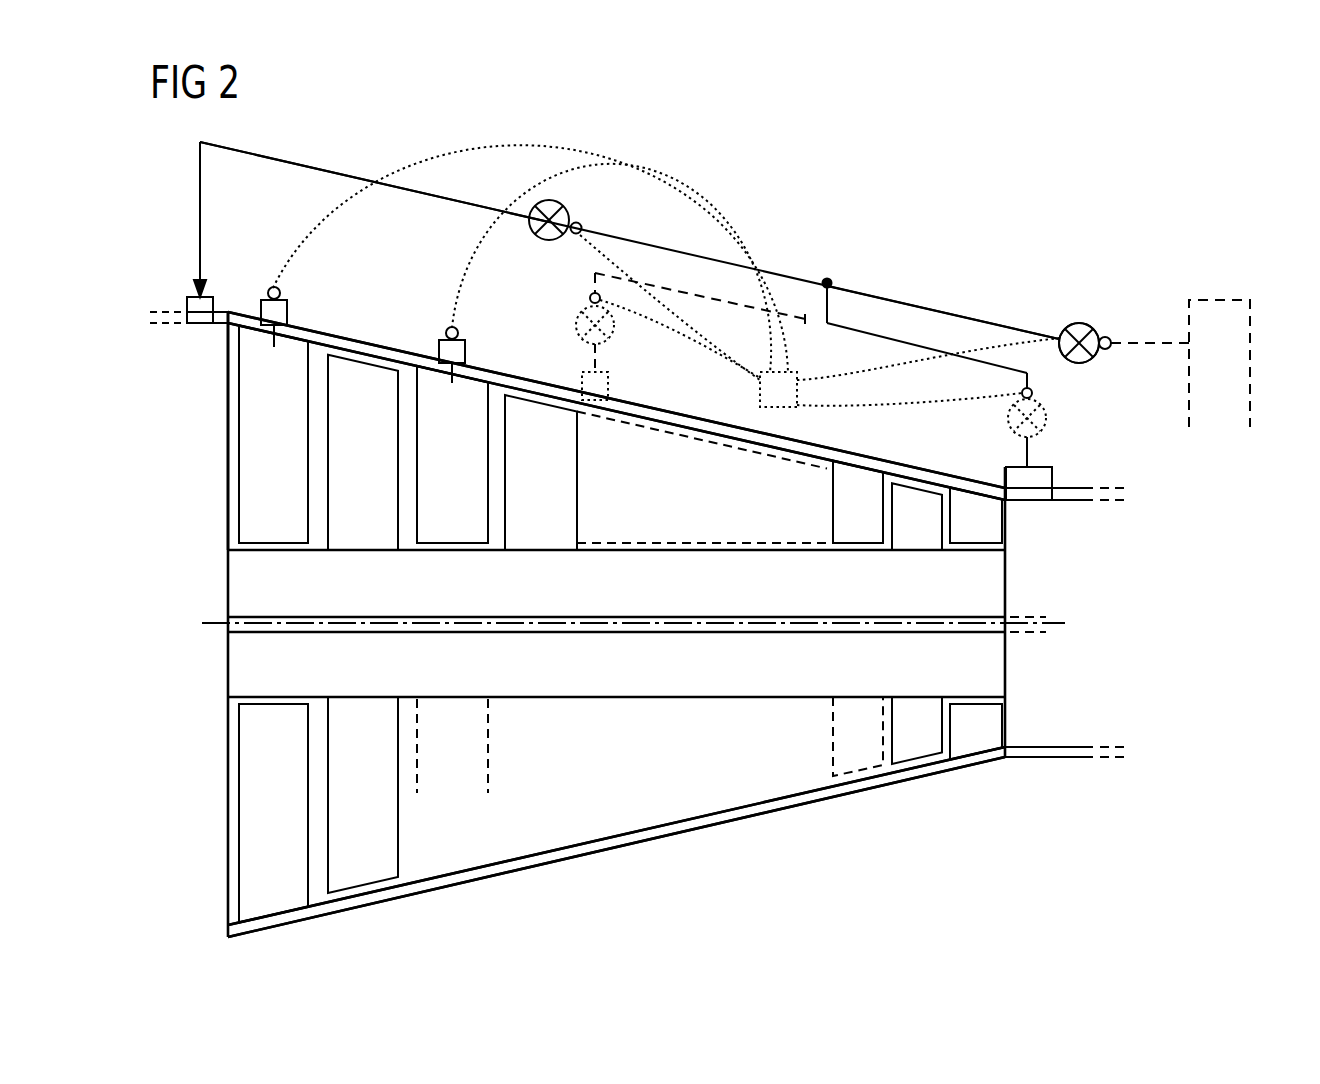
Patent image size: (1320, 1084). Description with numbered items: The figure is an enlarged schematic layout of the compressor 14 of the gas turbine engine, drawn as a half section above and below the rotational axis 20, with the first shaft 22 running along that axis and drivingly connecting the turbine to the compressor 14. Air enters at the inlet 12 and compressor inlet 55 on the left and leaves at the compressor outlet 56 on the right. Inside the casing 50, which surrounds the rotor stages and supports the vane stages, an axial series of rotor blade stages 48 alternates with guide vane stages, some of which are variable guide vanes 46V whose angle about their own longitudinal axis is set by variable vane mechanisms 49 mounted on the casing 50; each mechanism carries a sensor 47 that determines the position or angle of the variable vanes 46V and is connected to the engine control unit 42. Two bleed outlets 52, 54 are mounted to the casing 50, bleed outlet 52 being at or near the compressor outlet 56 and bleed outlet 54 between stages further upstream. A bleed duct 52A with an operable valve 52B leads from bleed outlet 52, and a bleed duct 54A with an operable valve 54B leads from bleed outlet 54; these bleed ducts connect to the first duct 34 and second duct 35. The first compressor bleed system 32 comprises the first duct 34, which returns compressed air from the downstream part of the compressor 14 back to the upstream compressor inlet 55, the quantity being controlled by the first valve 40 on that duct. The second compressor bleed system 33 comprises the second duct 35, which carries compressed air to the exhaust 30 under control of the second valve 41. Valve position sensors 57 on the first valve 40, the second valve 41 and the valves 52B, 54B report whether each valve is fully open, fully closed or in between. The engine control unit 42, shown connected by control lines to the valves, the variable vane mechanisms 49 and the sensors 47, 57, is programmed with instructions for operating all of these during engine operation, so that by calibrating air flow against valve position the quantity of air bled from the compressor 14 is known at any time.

The inlet 12 is at (184, 376).
The compressor 14 is at (1078, 284).
The rotational axis 20 is at (210, 627).
The first shaft 22 is at (1008, 613).
The exhaust 30 is at (1220, 300).
The first compressor bleed system 32 is at (462, 189).
The second compressor bleed system 33 is at (1003, 311).
The first duct 34 is at (386, 187).
The second duct 35 is at (887, 296).
The first valve 40 is at (570, 209).
The second valve 41 is at (1096, 326).
The engine control unit 42 is at (785, 408).
The variable guide vanes 46V is at (258, 418).
The sensor 47 is at (281, 291).
The rotor blade stages 48 is at (377, 469).
The variable vane mechanism 49 is at (267, 287).
The casing 50 is at (349, 338).
The bleed outlet 52 is at (1052, 480).
The bleed duct 52A is at (1021, 455).
The operable valve 52B is at (1047, 420).
The bleed outlet 54 is at (581, 380).
The bleed duct 54A is at (805, 316).
The operable valve 54B is at (614, 337).
The compressor inlet 55 is at (227, 490).
The compressor outlet 56 is at (1008, 714).
The valve position sensors 57 is at (572, 236).